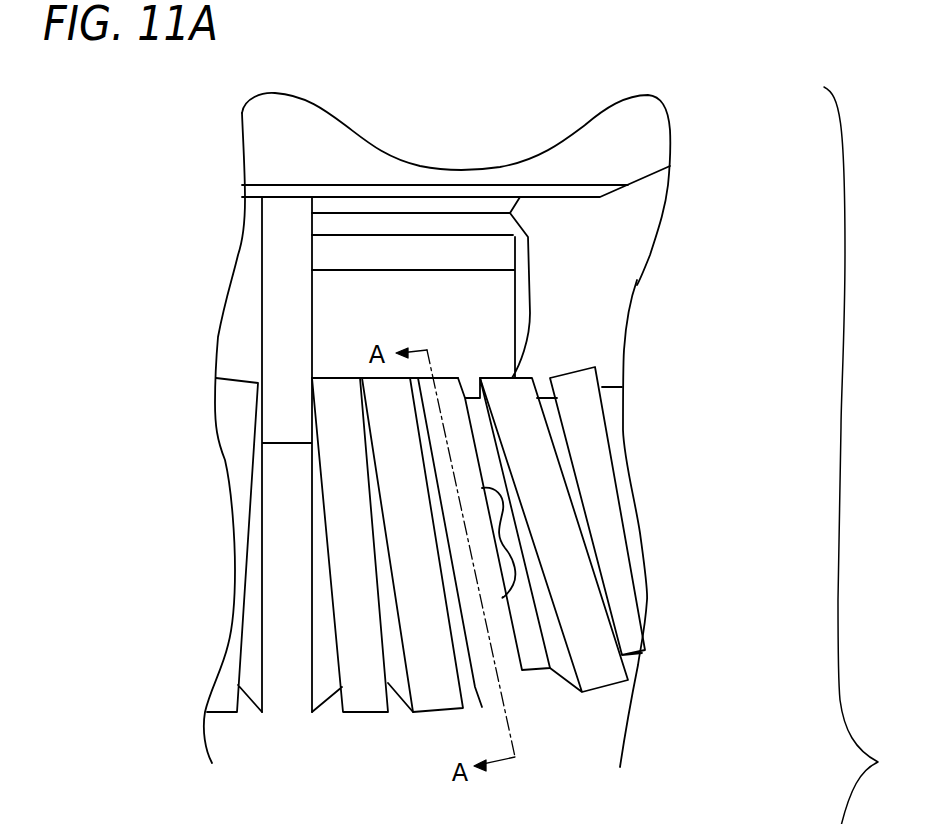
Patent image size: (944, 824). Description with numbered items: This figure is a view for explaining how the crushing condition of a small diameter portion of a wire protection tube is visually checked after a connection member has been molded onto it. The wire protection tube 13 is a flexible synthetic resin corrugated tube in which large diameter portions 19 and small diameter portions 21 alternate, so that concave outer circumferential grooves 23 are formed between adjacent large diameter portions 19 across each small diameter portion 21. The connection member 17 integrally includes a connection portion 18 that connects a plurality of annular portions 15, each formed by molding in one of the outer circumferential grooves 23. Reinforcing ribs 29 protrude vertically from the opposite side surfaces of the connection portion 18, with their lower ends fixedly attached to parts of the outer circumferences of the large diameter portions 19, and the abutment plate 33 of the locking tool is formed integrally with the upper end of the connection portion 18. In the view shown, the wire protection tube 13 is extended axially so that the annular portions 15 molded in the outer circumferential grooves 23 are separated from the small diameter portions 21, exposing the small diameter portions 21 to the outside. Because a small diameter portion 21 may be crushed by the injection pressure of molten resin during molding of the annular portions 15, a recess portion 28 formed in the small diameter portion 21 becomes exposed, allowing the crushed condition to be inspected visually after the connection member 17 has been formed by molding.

The wire protection tube 13 is at (590, 353).
The annular portions 15 is at (222, 698).
The connection member 17 is at (285, 169).
The connection portion 18 is at (457, 310).
The large diameter portions 19 is at (395, 462).
The small diameter portions 21 is at (527, 643).
The outer circumferential grooves 23 is at (548, 683).
The recess portion 28 is at (507, 557).
The reinforcing ribs 29 is at (290, 293).
The abutment plate 33 is at (638, 146).